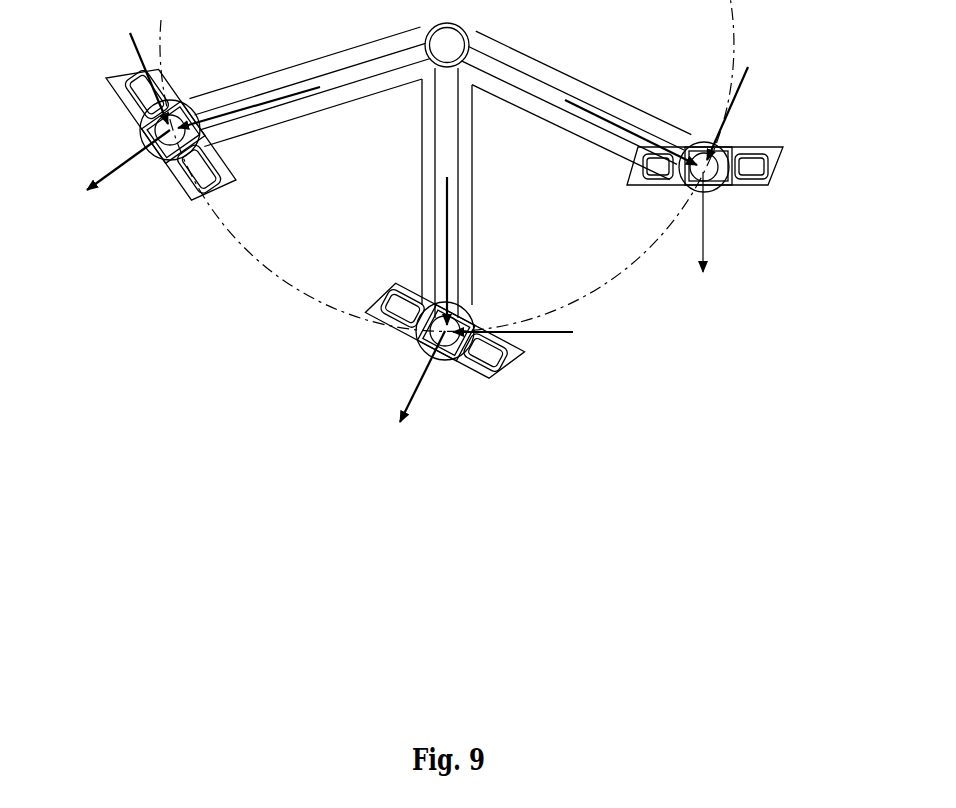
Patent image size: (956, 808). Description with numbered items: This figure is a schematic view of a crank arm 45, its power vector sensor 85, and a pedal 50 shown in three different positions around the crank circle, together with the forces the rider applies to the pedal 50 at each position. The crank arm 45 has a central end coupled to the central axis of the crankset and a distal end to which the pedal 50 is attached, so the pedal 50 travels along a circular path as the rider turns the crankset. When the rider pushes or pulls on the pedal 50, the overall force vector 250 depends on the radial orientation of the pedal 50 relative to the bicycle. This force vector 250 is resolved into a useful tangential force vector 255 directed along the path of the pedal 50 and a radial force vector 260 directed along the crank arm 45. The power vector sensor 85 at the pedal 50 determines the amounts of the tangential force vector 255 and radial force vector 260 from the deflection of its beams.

The crank arm 45 is at (363, 47).
The pedal 50 is at (118, 97).
The power vector sensor 85 is at (178, 98).
The force vector 250 is at (107, 176).
The tangential force vector 255 is at (133, 44).
The radial force vector 260 is at (270, 94).